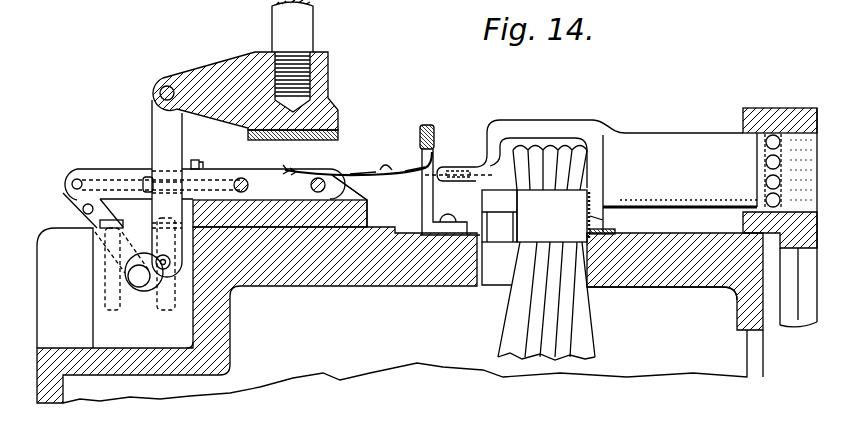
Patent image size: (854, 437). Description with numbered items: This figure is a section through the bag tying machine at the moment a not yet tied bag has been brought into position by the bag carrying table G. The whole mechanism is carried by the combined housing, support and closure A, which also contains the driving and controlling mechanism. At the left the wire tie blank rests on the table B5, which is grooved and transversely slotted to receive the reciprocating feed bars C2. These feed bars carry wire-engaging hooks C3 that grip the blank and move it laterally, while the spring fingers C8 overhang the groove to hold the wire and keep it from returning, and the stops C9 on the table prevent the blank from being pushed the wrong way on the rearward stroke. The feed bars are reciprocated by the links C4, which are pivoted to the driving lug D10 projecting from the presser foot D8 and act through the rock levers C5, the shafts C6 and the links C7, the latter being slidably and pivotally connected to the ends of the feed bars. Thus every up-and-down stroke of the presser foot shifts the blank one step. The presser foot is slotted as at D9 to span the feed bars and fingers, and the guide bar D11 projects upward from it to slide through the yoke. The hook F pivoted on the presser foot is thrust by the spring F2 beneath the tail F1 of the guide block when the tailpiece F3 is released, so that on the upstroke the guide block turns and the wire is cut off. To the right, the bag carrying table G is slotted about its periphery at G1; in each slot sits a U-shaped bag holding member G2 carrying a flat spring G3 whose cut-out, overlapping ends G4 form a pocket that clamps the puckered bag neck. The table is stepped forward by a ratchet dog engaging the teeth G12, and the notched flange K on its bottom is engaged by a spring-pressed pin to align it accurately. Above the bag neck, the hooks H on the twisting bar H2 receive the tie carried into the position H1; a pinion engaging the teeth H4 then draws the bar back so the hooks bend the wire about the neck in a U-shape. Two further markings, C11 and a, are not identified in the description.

The combined housing, support, and closure A is at (377, 380).
The table B5 is at (292, 218).
The feed bars C2 is at (107, 172).
The wire-engaging hooks C3 is at (193, 160).
The links C4 is at (140, 113).
The rock levers C5 is at (165, 300).
The shafts C6 is at (140, 293).
The links C7 is at (85, 213).
The spring fingers C8 is at (386, 166).
The stops C9 is at (200, 165).
The wedge C11 is at (368, 197).
The presser foot D8 is at (338, 110).
The coil springs D9 is at (338, 133).
The driving lug D10 is at (213, 72).
The guide bar D11 is at (308, 23).
The hook F is at (285, 168).
The tail F1 is at (412, 166).
The spring F2 is at (421, 205).
The tailpiece F3 is at (374, 168).
The bag carrying table G is at (678, 285).
The slots G1 is at (627, 285).
The bag holding U-shaped member G2 is at (590, 215).
The flat bag holding spring G3 is at (555, 235).
The overlapping cut-out ends G4 is at (494, 207).
The teeth G12 is at (772, 273).
The hooks H is at (440, 165).
The tie position H1 is at (473, 167).
The twisting bar H2 is at (638, 145).
The teeth H4 is at (762, 182).
The flange K is at (762, 330).
The opening a is at (629, 429).